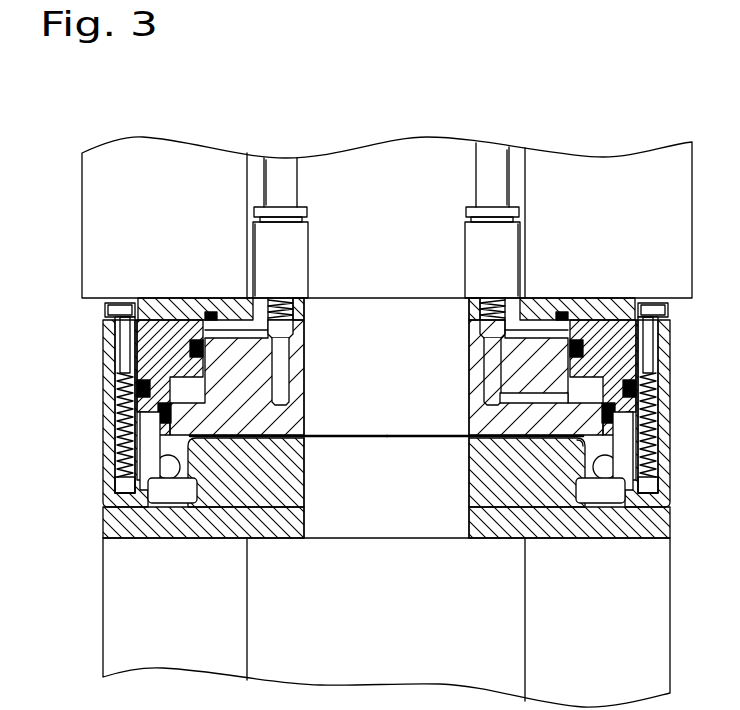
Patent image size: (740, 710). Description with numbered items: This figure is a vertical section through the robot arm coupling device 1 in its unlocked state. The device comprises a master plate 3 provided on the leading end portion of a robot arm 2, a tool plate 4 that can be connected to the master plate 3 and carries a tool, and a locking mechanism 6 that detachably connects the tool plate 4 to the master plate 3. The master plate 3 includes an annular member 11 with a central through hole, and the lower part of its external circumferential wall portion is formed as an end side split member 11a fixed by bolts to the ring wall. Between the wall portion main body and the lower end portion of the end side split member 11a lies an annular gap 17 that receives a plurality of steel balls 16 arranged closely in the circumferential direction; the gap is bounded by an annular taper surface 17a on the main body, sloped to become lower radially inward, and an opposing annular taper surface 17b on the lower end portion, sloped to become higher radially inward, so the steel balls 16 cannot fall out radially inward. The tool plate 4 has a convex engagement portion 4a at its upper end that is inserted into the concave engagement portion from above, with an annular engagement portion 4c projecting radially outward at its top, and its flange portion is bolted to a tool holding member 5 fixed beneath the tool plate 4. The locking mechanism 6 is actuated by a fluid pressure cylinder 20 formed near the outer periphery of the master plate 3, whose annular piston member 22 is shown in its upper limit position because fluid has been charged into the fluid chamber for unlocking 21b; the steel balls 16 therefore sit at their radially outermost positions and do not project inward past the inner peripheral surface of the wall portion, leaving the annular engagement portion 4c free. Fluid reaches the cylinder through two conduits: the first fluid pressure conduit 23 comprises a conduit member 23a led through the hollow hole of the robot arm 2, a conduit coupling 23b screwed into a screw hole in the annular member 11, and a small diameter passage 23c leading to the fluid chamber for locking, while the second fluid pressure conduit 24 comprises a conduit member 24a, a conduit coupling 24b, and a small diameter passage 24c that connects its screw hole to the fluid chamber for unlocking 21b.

The robot arm coupling device 1 is at (572, 272).
The robot arm 2 is at (82, 232).
The master plate 3 is at (104, 450).
The tool plate 4 is at (103, 520).
The convex engagement portion 4a is at (540, 483).
The annular engagement portion 4c is at (573, 450).
The tool holding member 5 is at (103, 620).
The locking mechanism 6 is at (175, 490).
The annular member 11 is at (518, 355).
The end side split member 11a is at (635, 497).
The steel balls 16 is at (168, 470).
The annular gap 17 is at (587, 477).
The annular taper surface 17a is at (182, 462).
The annular taper surface 17b is at (180, 477).
The fluid pressure cylinder 20 is at (180, 318).
The fluid chamber for unlocking 21b is at (190, 392).
The piston member 22 is at (133, 352).
The first fluid pressure conduit 23 is at (297, 187).
The conduit member 23a is at (275, 172).
The conduit coupling 23b is at (290, 253).
The small diameter passage 23c is at (237, 337).
The second fluid pressure conduit 24 is at (515, 177).
The conduit member 24a is at (483, 190).
The conduit coupling 24b is at (478, 278).
The small diameter passage 24c is at (485, 370).